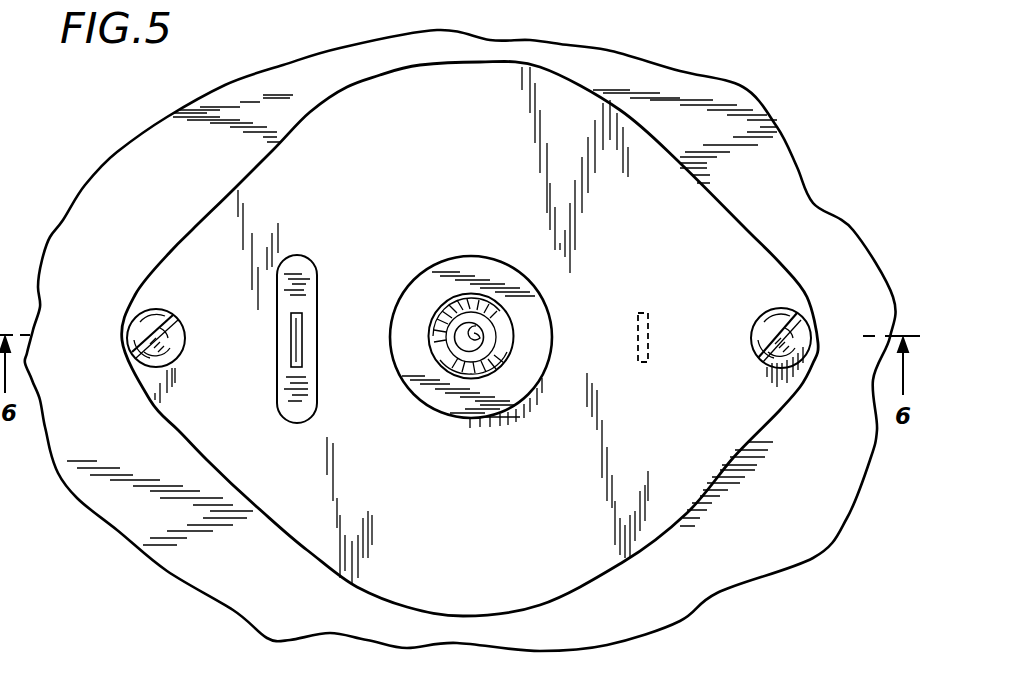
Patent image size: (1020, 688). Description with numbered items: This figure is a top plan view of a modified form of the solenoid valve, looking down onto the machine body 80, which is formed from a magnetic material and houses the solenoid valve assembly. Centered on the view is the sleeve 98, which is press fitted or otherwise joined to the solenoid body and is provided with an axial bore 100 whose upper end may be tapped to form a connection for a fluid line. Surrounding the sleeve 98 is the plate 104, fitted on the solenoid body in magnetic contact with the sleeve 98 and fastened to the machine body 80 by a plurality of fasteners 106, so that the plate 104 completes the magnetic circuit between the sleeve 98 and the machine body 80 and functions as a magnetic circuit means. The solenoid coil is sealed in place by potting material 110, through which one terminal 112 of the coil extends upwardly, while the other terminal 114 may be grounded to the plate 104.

The machine body 80 is at (790, 553).
The sleeve 98 is at (511, 268).
The axial bore 100 is at (482, 340).
The plate 104 is at (733, 461).
The fasteners 106 is at (186, 340).
The potting material 110 is at (310, 355).
The terminal 112 is at (297, 362).
The other terminal 114 is at (650, 360).